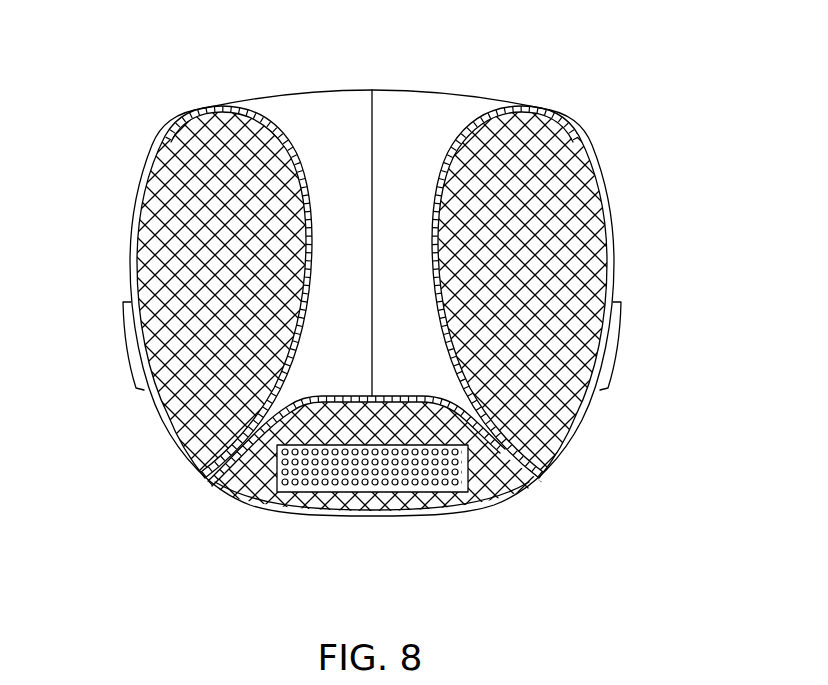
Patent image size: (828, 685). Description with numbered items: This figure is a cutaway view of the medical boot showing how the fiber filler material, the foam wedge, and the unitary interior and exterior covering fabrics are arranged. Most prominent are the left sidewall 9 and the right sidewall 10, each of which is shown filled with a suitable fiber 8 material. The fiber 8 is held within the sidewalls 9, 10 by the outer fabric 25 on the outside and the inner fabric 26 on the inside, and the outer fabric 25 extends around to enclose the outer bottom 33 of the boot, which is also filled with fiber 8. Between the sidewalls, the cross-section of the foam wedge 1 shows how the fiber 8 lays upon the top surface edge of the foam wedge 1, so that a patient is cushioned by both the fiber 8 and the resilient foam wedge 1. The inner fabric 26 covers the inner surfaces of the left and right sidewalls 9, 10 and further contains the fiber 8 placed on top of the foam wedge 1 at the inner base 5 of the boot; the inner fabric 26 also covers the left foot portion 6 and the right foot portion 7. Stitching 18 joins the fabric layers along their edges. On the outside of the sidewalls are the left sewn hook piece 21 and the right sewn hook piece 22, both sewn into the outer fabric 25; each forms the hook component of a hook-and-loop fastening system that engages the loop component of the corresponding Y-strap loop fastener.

The foam wedge 1 is at (413, 473).
The inner base 5 is at (335, 382).
The left foot portion 6 is at (282, 107).
The right foot portion 7 is at (433, 107).
The fiber 8 is at (163, 197).
The left sidewall 9 is at (157, 131).
The right sidewall 10 is at (574, 117).
The stitching 18 is at (217, 108).
The left sewn hook piece 21 is at (128, 343).
The right sewn hook piece 22 is at (615, 340).
The outer fabric 25 is at (128, 260).
The inner fabric 26 is at (327, 134).
The outer bottom 33 is at (383, 517).